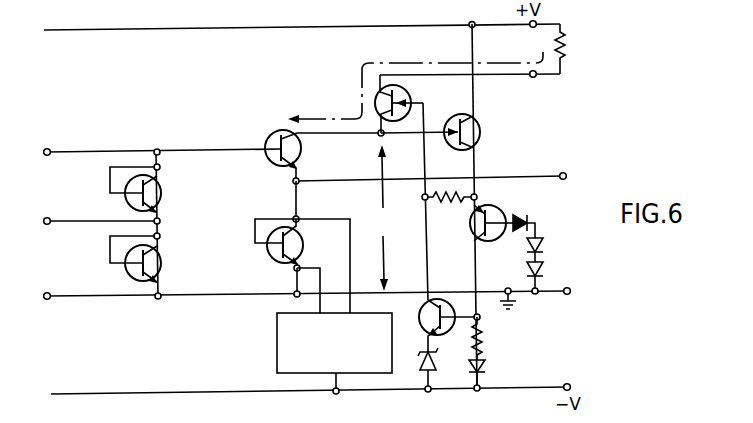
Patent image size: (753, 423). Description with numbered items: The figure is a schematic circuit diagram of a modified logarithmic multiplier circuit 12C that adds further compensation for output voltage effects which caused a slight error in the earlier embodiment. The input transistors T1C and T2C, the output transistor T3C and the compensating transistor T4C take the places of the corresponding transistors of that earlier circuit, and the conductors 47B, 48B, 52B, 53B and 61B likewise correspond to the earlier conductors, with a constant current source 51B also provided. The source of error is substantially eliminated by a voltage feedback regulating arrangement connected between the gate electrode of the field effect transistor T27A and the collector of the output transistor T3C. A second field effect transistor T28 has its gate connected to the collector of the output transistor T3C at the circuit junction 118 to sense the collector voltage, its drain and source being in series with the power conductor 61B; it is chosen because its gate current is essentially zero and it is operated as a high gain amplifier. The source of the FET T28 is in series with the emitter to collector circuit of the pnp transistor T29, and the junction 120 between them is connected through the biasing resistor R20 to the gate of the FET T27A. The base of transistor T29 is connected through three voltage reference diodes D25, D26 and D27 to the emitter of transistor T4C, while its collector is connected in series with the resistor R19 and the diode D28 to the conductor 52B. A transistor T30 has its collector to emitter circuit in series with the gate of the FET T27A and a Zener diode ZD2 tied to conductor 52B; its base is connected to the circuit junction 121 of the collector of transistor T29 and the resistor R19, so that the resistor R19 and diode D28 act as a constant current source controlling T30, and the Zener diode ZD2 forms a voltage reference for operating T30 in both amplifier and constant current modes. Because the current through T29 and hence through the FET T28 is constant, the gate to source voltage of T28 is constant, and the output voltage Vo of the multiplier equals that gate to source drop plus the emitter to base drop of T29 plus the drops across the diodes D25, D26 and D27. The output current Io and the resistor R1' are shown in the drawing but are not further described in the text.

The power conductor 61B is at (360, 27).
The conductor 47B is at (192, 150).
The modified circuit 12C is at (225, 231).
The conductor 48B is at (212, 297).
The conductor 52B is at (148, 394).
The conductor 53B is at (505, 177).
The constant current source 51B is at (277, 354).
The circuit junction 118 is at (382, 135).
The node 120 is at (477, 195).
The circuit junction 121 is at (480, 319).
The input transistor T1C is at (163, 195).
The input transistor T2C is at (164, 266).
The output transistor T3C is at (266, 160).
The compensating transistor T4C is at (276, 262).
The field effect transistor T27A is at (412, 92).
The field effect transistor T28 is at (478, 124).
The pnp transistor T29 is at (473, 241).
The transistor T30 is at (421, 313).
The resistor R1' is at (576, 49).
The biasing resistor R20 is at (449, 212).
The resistor R19 is at (485, 343).
The voltage reference diode D25 is at (522, 213).
The voltage reference diode D26 is at (543, 246).
The voltage reference diode D27 is at (543, 272).
The diode D28 is at (485, 371).
The Zener diode ZD2 is at (420, 372).
The output current Io is at (415, 87).
The output voltage Vo is at (385, 218).